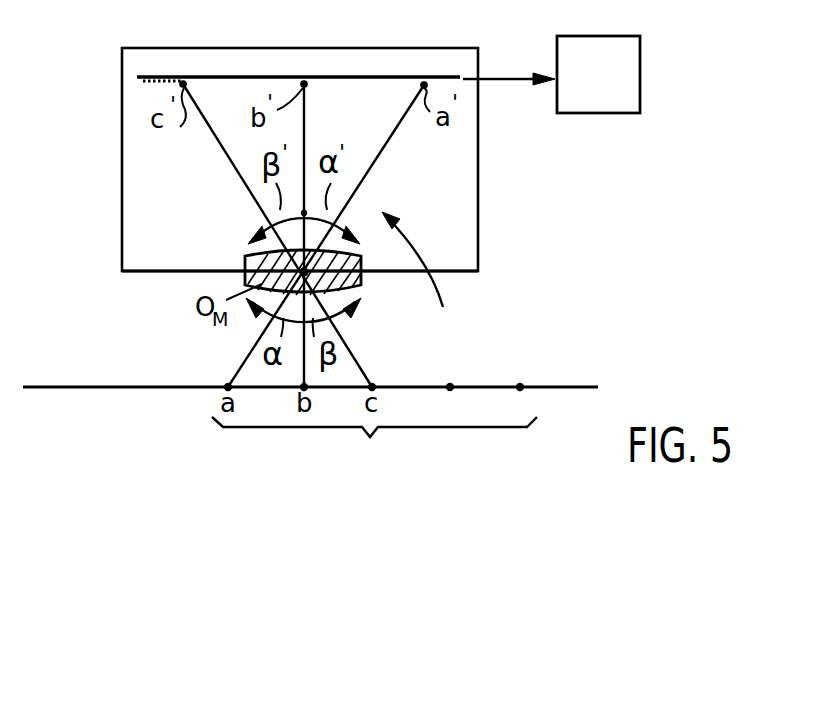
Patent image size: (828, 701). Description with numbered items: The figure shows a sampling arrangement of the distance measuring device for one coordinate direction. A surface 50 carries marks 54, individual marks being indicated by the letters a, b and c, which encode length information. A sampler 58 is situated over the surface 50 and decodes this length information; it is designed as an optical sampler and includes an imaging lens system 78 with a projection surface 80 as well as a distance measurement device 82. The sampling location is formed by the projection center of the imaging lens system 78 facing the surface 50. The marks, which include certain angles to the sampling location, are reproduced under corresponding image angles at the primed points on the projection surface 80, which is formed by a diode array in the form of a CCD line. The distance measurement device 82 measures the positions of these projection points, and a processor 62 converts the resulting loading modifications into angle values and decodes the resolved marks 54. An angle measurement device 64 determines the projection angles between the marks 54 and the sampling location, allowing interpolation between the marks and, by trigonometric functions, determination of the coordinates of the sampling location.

The surface 50 is at (73, 390).
The marks 54 is at (374, 447).
The sampler 58 is at (480, 237).
The processor 62 is at (628, 72).
The angle measurement device 64 is at (437, 274).
The imaging lens system 78 is at (362, 293).
The projection surface 80 is at (370, 82).
The distance measurement device 82 is at (227, 75).